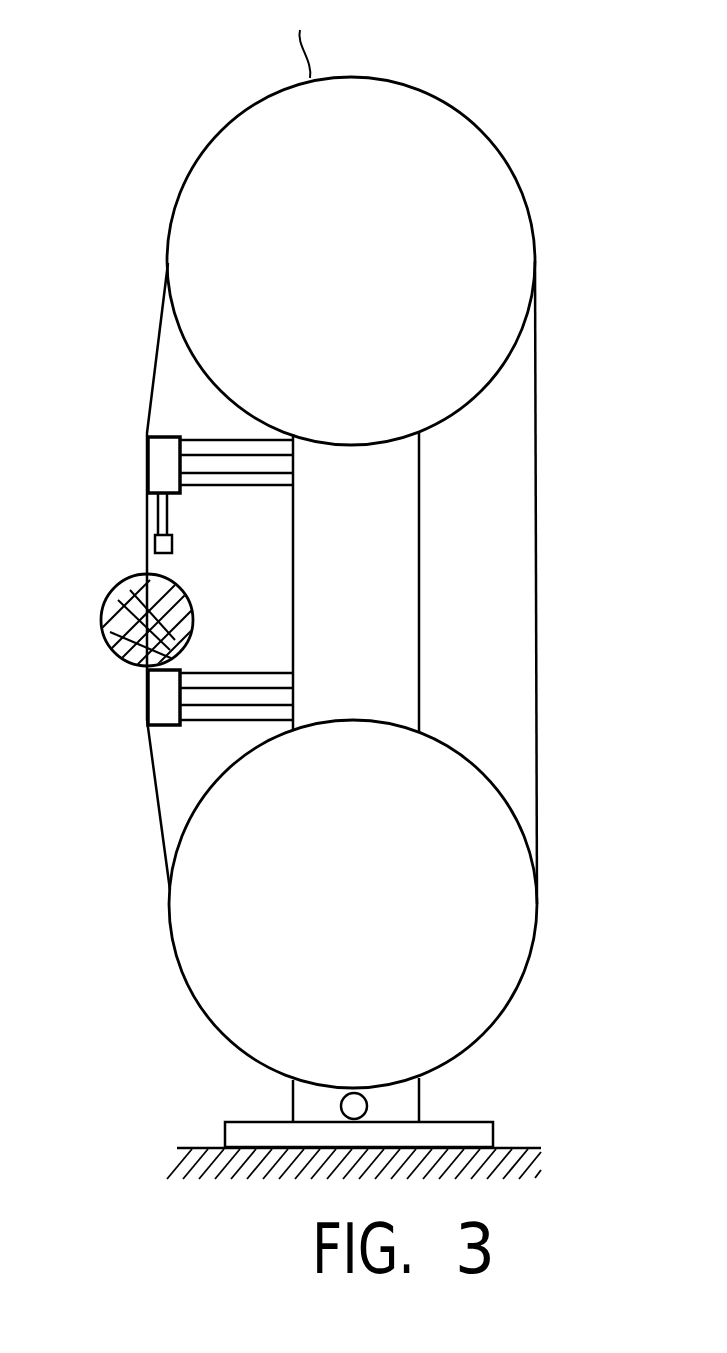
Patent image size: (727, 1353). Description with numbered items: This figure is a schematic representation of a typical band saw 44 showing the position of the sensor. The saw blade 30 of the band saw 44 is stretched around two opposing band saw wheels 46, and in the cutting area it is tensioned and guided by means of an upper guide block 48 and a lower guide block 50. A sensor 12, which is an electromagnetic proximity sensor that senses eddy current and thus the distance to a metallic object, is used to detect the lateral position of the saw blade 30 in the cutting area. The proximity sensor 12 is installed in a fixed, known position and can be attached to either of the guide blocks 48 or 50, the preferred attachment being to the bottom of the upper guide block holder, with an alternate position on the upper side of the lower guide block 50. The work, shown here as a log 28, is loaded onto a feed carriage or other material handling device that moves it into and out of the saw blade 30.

The sensor 12 is at (172, 539).
The log 28 is at (120, 657).
The saw blade 30 is at (155, 362).
The band saw 44 is at (296, 39).
The band saw wheels 46 is at (356, 330).
The upper guide block 48 is at (148, 450).
The lower guide block 50 is at (163, 713).